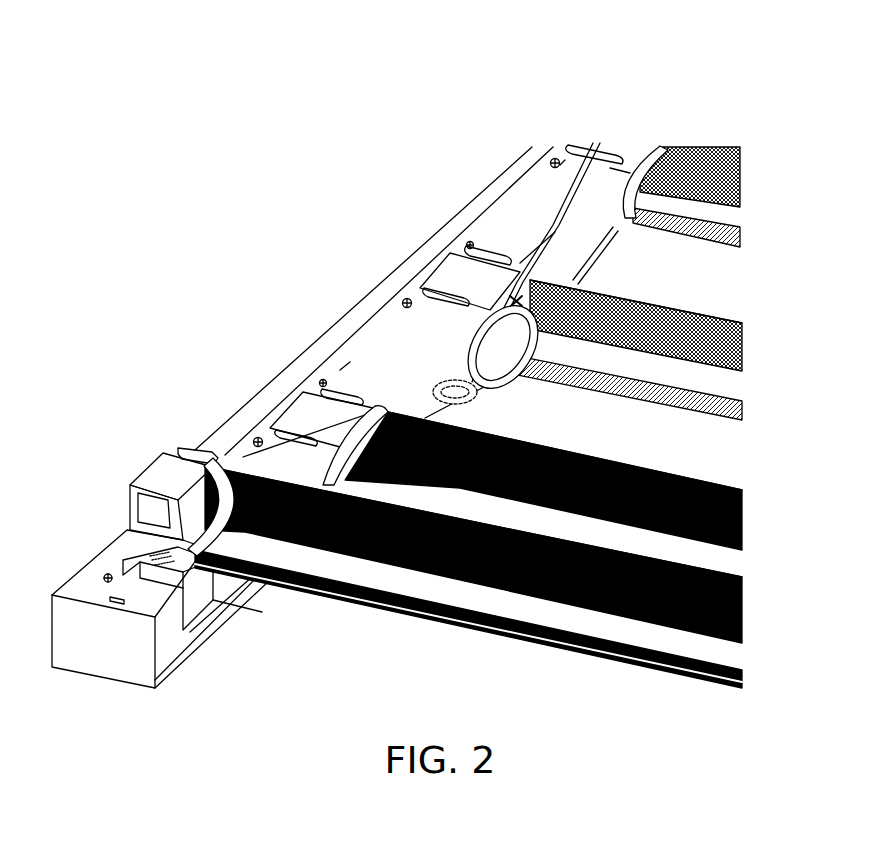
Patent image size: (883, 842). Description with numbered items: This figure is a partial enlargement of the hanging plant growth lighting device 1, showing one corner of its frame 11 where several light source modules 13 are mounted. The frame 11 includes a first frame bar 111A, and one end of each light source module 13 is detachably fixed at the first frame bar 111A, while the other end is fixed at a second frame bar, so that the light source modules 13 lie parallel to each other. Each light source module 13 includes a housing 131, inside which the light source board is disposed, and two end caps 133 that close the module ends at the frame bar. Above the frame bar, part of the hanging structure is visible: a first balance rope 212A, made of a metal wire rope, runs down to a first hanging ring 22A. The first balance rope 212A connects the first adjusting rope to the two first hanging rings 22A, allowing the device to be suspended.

The hanging plant growth lighting device 1 is at (323, 186).
The frame 11 is at (343, 296).
The first frame bar 111A is at (345, 380).
The light source module 13 is at (745, 346).
The housing 131 is at (727, 315).
The end cap 133 is at (447, 273).
The first balance rope 212A is at (563, 222).
The first hanging ring 22A is at (500, 388).